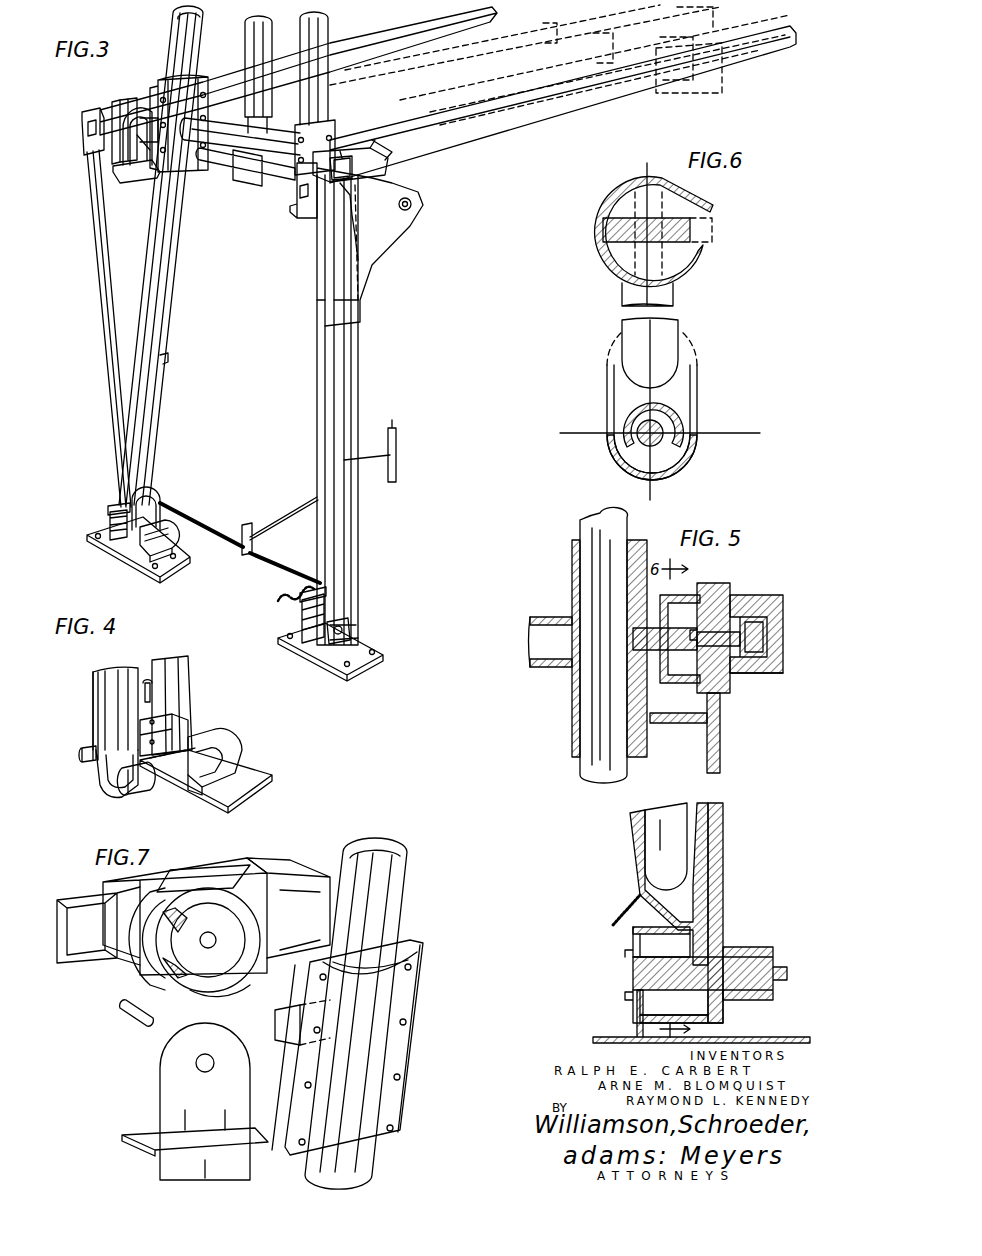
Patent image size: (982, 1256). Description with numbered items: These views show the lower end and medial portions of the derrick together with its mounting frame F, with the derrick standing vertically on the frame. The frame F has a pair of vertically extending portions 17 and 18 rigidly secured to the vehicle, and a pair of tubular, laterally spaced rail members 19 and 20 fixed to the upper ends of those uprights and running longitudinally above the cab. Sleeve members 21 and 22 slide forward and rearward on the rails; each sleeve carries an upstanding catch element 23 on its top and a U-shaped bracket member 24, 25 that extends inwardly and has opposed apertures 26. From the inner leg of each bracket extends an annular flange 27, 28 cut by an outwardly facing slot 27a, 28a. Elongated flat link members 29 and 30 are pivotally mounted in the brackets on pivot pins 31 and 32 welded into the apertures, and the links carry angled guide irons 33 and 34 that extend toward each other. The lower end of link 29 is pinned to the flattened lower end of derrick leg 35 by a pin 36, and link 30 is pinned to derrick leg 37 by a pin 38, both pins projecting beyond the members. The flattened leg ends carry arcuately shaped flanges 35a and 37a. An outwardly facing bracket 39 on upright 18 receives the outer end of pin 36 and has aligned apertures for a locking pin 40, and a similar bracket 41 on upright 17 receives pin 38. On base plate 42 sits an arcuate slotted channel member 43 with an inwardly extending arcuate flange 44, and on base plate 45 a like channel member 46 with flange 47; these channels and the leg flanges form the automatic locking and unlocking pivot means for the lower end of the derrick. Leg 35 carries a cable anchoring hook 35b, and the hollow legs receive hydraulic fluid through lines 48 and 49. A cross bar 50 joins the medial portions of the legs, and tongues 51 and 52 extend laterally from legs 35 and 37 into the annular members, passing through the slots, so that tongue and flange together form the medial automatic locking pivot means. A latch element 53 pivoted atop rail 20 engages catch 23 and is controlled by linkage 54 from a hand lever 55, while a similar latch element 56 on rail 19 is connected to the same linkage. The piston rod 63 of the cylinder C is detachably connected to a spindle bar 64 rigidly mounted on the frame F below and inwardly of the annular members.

In FIG. 3, the vertically extending portion 17 is at (343, 385).
In FIG. 3, the vertically extending portion 18 is at (103, 336).
In FIG. 4, the vertically extending portion 18 is at (185, 667).
In FIG. 3, the rail member 19 is at (415, 20).
In FIG. 7, the rail member 19 is at (78, 902).
In FIG. 3, the rail member 20 is at (540, 112).
In FIG. 5, the rail member 20 is at (775, 637).
In FIG. 3, the sleeve member 21 is at (113, 105).
In FIG. 7, the sleeve member 21 is at (292, 878).
In FIG. 3, the sleeve member 22 is at (378, 172).
In FIG. 5, the sleeve member 22 is at (767, 675).
In FIG. 3, the catch element 23 is at (342, 172).
In FIG. 7, the catch element 23 is at (178, 876).
In FIG. 5, the catch element 23 is at (752, 600).
In FIG. 3, the U-shaped bracket member 24 is at (120, 145).
In FIG. 7, the U-shaped bracket member 24 is at (258, 912).
In FIG. 3, the U-shaped bracket member 25 is at (372, 143).
In FIG. 5, the U-shaped bracket member 25 is at (717, 590).
In FIG. 7, the aperture 26 is at (152, 990).
In FIG. 3, the annular flange 27 is at (137, 141).
In FIG. 7, the annular flange 27 is at (215, 990).
In FIG. 7, the slot 27a is at (160, 968).
In FIG. 6, the annular flange 28 is at (683, 187).
In FIG. 5, the annular flange 28 is at (668, 690).
In FIG. 6, the slot 28a is at (714, 230).
In FIG. 4, the link member 29 is at (96, 705).
In FIG. 7, the link member 29 is at (175, 1095).
In FIG. 3, the link member 30 is at (318, 428).
In FIG. 5, the link member 30 is at (721, 757).
In FIG. 7, the pivot pin 31 is at (143, 1030).
In FIG. 5, the pivot pin 32 is at (728, 655).
In FIG. 3, the angled guide iron 33 is at (134, 182).
In FIG. 7, the angled guide iron 33 is at (125, 1153).
In FIG. 5, the guide iron 34 is at (690, 725).
In FIG. 3, the derrick leg 35 is at (152, 439).
In FIG. 4, the derrick leg 35 is at (122, 675).
In FIG. 7, the derrick leg 35 is at (395, 933).
In FIG. 4, the arcuately shaped flange 35a is at (122, 800).
In FIG. 3, the cable anchoring hook 35b is at (168, 356).
In FIG. 3, the pin 36 is at (110, 524).
In FIG. 4, the pin 36 is at (85, 760).
In FIG. 3, the derrick leg 37 is at (322, 101).
In FIG. 6, the derrick leg 37 is at (672, 295).
In FIG. 5, the derrick leg 37 is at (585, 772).
In FIG. 6, the arcuately shaped flange 37a is at (612, 466).
In FIG. 5, the arcuately shaped flange 37a is at (650, 1019).
In FIG. 3, the pin 38 is at (352, 625).
In FIG. 6, the pin 38 is at (662, 442).
In FIG. 5, the pin 38 is at (633, 980).
In FIG. 3, the bracket 39 is at (108, 509).
In FIG. 4, the bracket 39 is at (172, 724).
In FIG. 4, the locking pin 40 is at (150, 690).
In FIG. 3, the bracket 41 is at (356, 635).
In FIG. 3, the base plate 42 is at (110, 548).
In FIG. 4, the base plate 42 is at (262, 792).
In FIG. 3, the slotted channel member 43 is at (166, 542).
In FIG. 4, the slotted channel member 43 is at (236, 756).
In FIG. 3, the arcuate flange 44 is at (158, 498).
In FIG. 4, the arcuate flange 44 is at (212, 740).
In FIG. 3, the base plate 45 is at (320, 655).
In FIG. 5, the base plate 45 is at (762, 1040).
In FIG. 3, the channel member 46 is at (302, 640).
In FIG. 5, the channel member 46 is at (633, 947).
In FIG. 3, the arcuately shaped flange 47 is at (300, 618).
In FIG. 6, the arcuately shaped flange 47 is at (625, 418).
In FIG. 5, the arcuately shaped flange 47 is at (668, 927).
In FIG. 3, the hydraulic line 48 is at (178, 512).
In FIG. 3, the hydraulic line 49 is at (278, 600).
In FIG. 5, the hydraulic line 49 is at (614, 916).
In FIG. 3, the cross bar 50 is at (228, 127).
In FIG. 5, the cross bar 50 is at (550, 621).
In FIG. 3, the tongue 51 is at (150, 138).
In FIG. 7, the tongue 51 is at (288, 1011).
In FIG. 6, the tongue 52 is at (612, 226).
In FIG. 5, the tongue 52 is at (668, 637).
In FIG. 3, the latch element 53 is at (330, 192).
In FIG. 3, the linkage 54 is at (352, 422).
In FIG. 3, the hand lever 55 is at (397, 430).
In FIG. 3, the latch element 56 is at (100, 107).
In FIG. 3, the piston rod 63 is at (268, 127).
In FIG. 3, the spindle bar 64 is at (228, 168).
In FIG. 3, the cylinder C is at (245, 44).
In FIG. 3, the mounting frame F is at (352, 345).